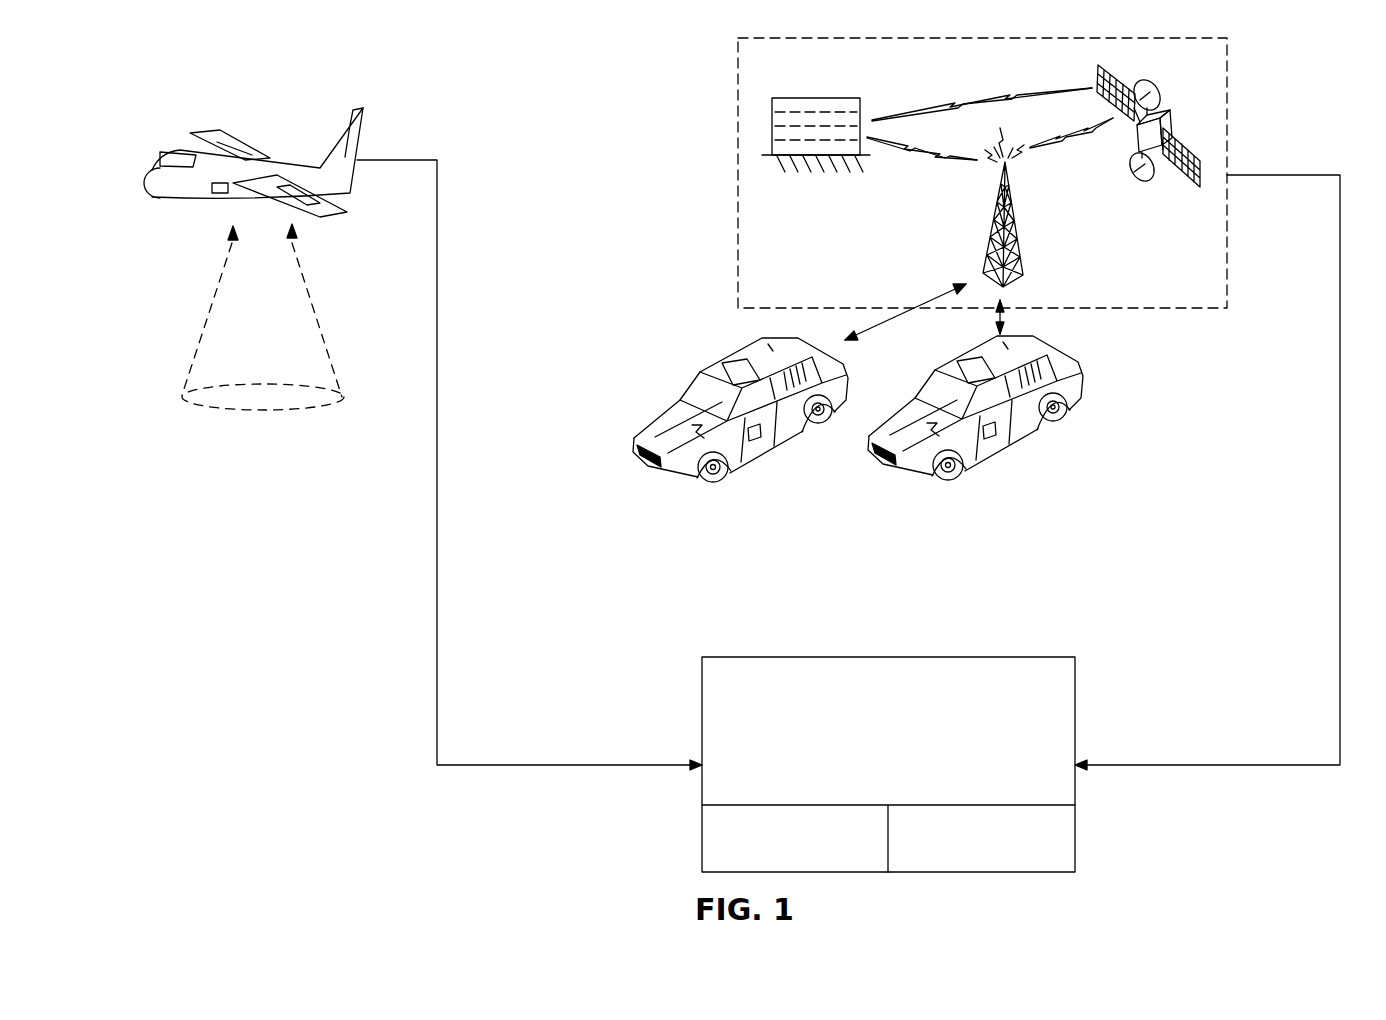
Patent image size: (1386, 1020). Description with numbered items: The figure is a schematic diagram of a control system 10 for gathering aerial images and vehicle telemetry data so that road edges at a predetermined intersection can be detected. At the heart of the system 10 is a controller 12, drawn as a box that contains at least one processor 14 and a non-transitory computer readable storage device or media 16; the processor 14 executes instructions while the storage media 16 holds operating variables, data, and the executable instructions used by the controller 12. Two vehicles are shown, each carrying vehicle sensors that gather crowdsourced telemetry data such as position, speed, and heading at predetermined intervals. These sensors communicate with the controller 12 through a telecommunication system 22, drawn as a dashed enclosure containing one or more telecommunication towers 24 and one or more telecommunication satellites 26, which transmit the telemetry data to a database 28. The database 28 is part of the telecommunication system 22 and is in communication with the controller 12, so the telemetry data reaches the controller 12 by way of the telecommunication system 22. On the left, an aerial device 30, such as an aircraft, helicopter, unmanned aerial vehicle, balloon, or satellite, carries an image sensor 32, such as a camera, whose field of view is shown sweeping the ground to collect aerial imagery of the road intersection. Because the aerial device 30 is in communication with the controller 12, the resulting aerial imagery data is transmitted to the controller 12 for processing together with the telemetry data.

The control system 10 is at (284, 781).
The controller 12 is at (1020, 657).
The processor 14 is at (776, 852).
The non-transitory computer readable storage device or media 16 is at (959, 852).
The telecommunication system 22 is at (793, 37).
The telecommunication tower 24 is at (1018, 240).
The telecommunication satellite 26 is at (1190, 150).
The database 28 is at (828, 98).
The aerial device 30 is at (270, 158).
The image sensor 32 is at (220, 195).